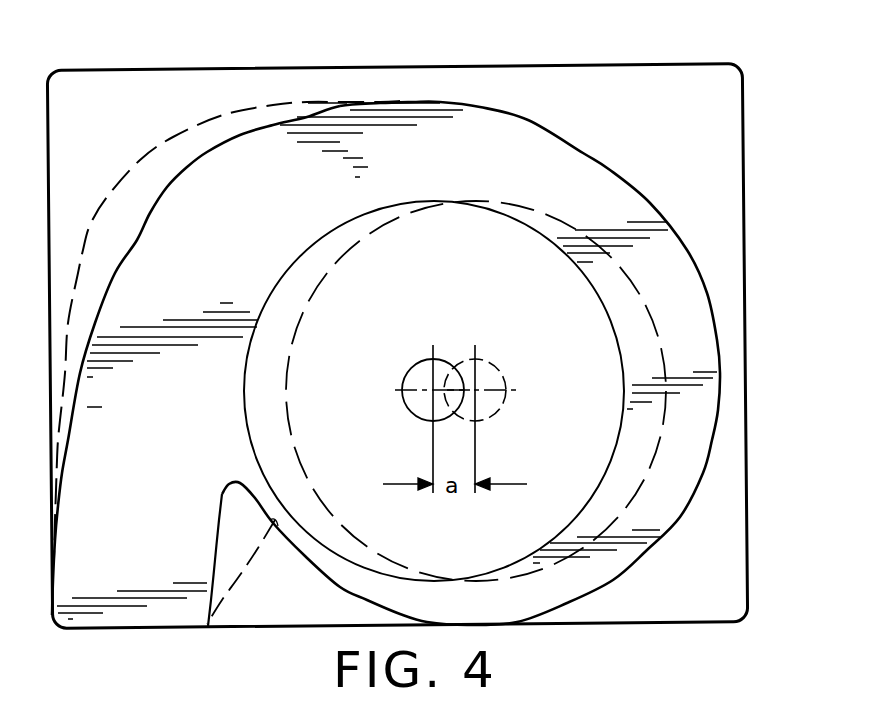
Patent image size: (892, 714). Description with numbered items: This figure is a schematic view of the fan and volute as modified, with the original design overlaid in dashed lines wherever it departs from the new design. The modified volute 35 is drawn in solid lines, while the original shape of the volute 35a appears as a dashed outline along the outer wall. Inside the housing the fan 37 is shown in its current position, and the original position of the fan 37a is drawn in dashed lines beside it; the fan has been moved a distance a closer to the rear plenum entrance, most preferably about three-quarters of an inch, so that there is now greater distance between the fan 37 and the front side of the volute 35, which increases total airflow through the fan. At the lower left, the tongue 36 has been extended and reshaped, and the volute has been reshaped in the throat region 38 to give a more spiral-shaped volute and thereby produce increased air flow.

The volute 35 is at (528, 118).
The original shape of the volute 35a is at (150, 152).
The tongue 36 is at (233, 488).
The fan 37 is at (597, 292).
The original position of the fan 37a is at (640, 493).
The throat region 38 is at (133, 257).